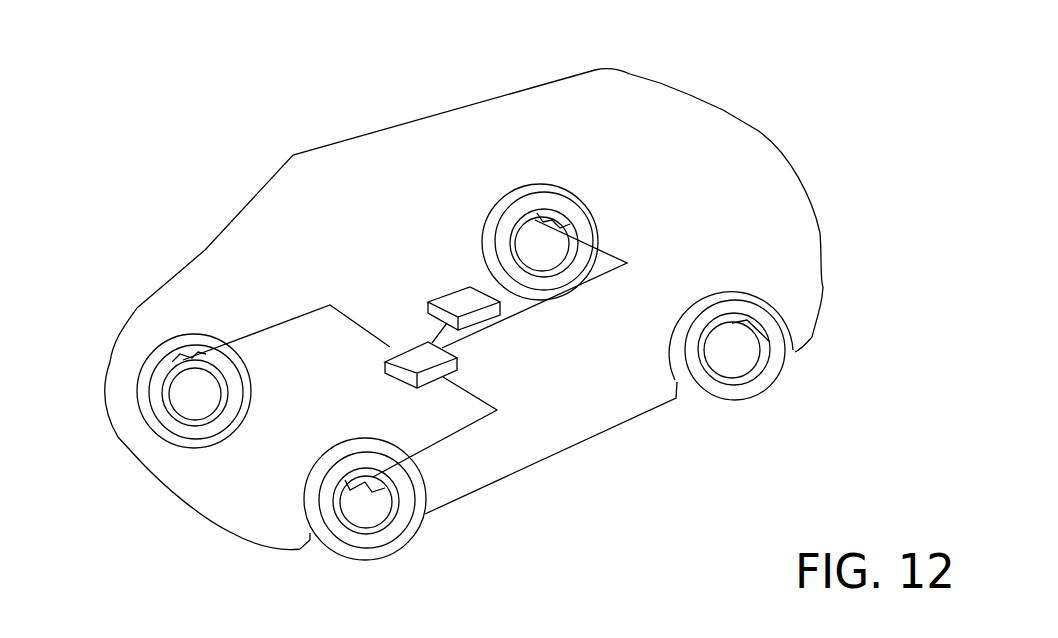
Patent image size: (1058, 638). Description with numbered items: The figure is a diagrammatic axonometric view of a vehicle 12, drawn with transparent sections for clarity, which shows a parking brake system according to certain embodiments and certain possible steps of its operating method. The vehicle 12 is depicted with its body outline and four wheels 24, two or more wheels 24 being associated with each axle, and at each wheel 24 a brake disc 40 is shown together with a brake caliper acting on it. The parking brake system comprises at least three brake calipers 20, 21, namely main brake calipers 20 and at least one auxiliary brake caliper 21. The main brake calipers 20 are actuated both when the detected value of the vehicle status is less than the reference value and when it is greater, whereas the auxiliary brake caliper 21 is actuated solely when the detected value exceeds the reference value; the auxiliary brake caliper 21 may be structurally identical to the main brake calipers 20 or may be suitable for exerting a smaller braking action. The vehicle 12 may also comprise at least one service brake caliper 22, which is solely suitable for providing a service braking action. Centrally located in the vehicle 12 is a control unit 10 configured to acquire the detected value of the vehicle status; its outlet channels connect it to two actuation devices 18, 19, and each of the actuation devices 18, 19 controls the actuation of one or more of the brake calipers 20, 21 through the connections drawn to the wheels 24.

The control unit 10 is at (460, 298).
The vehicle 12 is at (723, 108).
The first actuation device 18 is at (322, 259).
The second actuation device 19 is at (423, 357).
The main brake caliper 20 is at (335, 296).
The auxiliary brake caliper 21 is at (190, 357).
The service brake caliper 22 is at (750, 320).
The vehicle wheel 24 is at (148, 385).
The brake disc 40 is at (183, 403).